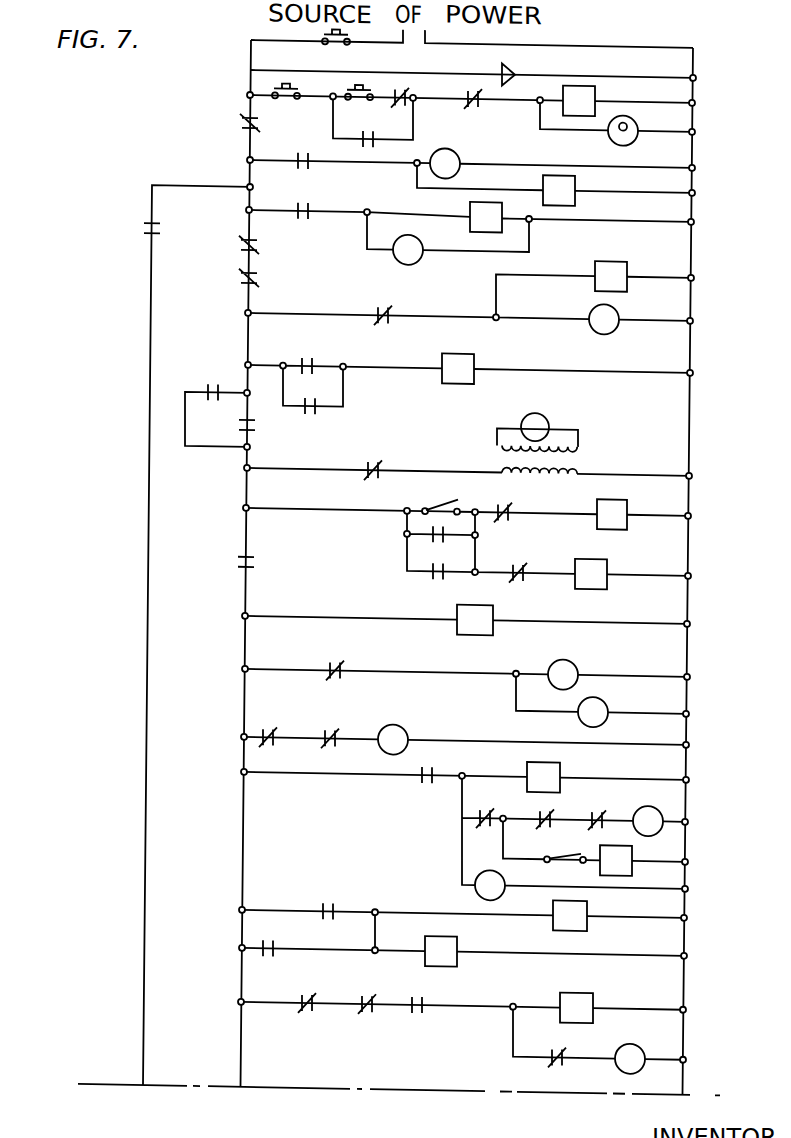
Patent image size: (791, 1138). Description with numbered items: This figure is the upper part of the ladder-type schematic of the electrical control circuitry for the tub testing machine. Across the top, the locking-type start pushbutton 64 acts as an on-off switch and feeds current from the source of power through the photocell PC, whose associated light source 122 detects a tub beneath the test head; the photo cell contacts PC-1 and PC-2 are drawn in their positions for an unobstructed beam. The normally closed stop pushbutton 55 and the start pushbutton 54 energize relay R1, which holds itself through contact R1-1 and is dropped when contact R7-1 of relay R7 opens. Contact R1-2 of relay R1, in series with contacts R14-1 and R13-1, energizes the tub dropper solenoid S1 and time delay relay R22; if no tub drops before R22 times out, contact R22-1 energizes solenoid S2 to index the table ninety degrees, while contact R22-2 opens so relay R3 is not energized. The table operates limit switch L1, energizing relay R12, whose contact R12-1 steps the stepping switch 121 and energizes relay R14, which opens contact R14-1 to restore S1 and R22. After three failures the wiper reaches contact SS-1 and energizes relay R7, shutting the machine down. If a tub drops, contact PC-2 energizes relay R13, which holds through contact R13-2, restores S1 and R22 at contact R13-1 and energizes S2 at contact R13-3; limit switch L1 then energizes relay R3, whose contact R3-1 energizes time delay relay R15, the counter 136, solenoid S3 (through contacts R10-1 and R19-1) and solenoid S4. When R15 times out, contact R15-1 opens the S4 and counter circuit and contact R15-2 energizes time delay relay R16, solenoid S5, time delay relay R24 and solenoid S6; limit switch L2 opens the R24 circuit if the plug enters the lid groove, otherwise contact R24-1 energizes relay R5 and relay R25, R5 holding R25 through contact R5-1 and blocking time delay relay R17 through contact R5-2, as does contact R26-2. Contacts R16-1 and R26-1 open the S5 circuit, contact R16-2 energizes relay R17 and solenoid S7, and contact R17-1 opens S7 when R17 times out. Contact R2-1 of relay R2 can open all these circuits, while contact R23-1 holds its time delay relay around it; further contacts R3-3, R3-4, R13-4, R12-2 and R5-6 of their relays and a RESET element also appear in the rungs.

The start pushbutton 64 is at (322, 46).
The photo cell PC is at (513, 67).
The stop pushbutton 55 is at (270, 90).
The start pushbutton 54 is at (348, 85).
The photocell relay contact PC-1 is at (399, 86).
The contact of relay R1 R1-1 is at (388, 125).
The contact of relay R7 R7-1 is at (475, 100).
The relay R1 is at (589, 95).
The light source 122 is at (630, 130).
The contact of relay R1 R1-2 is at (242, 124).
The contact of relay R12 R12-1 is at (304, 150).
The stepping switch 121 is at (448, 159).
The relay R14 is at (574, 187).
The contact of time delay relay R23 R23-1 is at (148, 229).
The third contact of the stepping switch SS-1 is at (310, 199).
The relay R7 is at (478, 208).
The reset solenoid RESET is at (393, 248).
The contact of relay R14 R14-1 is at (242, 249).
The contact of relay R2 R2-1 is at (242, 279).
The time delay relay R22 is at (605, 262).
The contact of relay R13 R13-1 is at (381, 302).
The solenoid S1 is at (615, 311).
The contact of the photo cell PC-2 is at (305, 357).
The relay R13 is at (467, 368).
The contact of time delay relay R22 R22-1 is at (215, 387).
The contact of relay R13 R13-3 is at (240, 427).
The contact of relay R13 R13-2 is at (311, 412).
The relay R3 contact 3 R3-3 is at (373, 459).
The solenoid S2 is at (542, 418).
The limit switch L1 is at (433, 499).
The contact of time delay relay R22 R22-2 is at (510, 505).
The relay R3 is at (623, 504).
The contact of relay R3 R3-1 is at (242, 563).
The relay R3 contact 4 R3-4 is at (430, 524).
The relay R13 contact 4 R13-4 is at (522, 564).
The relay R12 is at (597, 568).
The relay R12 contact 2 R12-2 is at (442, 570).
The time delay relay R15 is at (496, 613).
The contact of time delay relay R15 R15-1 is at (336, 659).
The solenoid S4 is at (570, 665).
The counter 136 is at (605, 707).
The contact of relay R10 R10-1 is at (270, 734).
The contact of time delay relay R19 R19-1 is at (328, 726).
The solenoid S3 is at (402, 722).
The contact of time delay relay R15 R15-2 is at (429, 762).
The time delay relay R16 is at (552, 774).
The contact of time delay relay R16 R16-1 is at (488, 809).
The contact of relay R26 R26-1 is at (546, 822).
The relay R5 contact 6 R5-6 is at (603, 796).
The solenoid S5 is at (665, 807).
The limit switch L2 is at (565, 857).
The time delay relay R24 is at (645, 853).
The solenoid S6 is at (480, 886).
The contact of relay R5 R5-1 is at (328, 900).
The relay R25 is at (582, 912).
The contact of time delay relay R24 R24-1 is at (275, 937).
The relay R5 is at (454, 950).
The contact of relay R26 R26-2 is at (369, 993).
The contact of relay R5 R5-2 is at (304, 1017).
The contact of time delay relay R16 R16-2 is at (421, 1014).
The time delay relay R17 is at (575, 1000).
The solenoid S7 is at (633, 1040).
The contact of time delay relay R17 R17-1 is at (560, 1065).